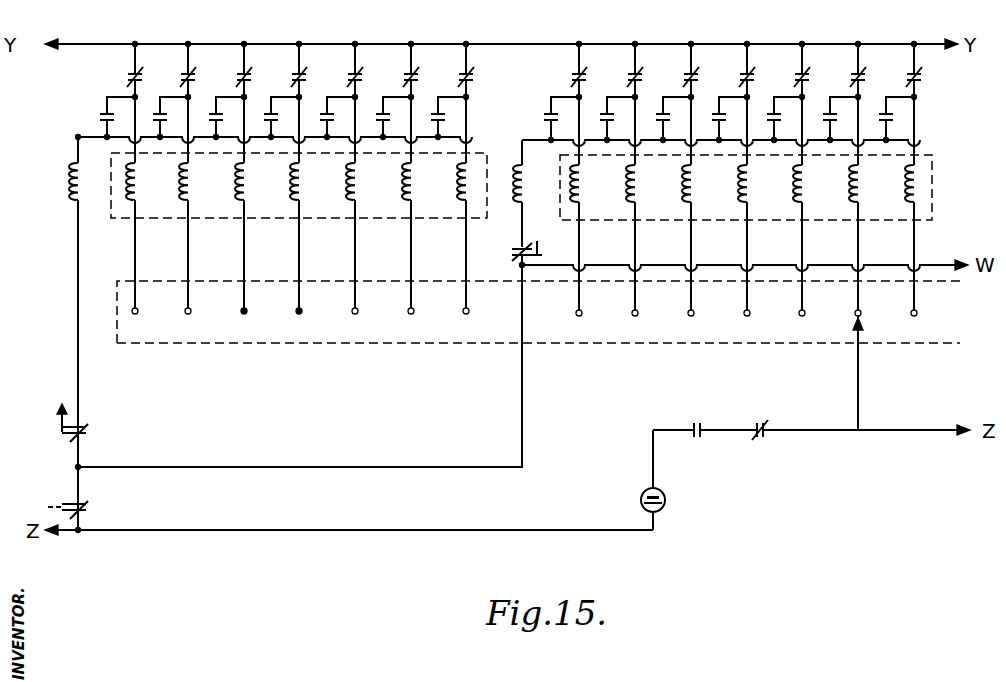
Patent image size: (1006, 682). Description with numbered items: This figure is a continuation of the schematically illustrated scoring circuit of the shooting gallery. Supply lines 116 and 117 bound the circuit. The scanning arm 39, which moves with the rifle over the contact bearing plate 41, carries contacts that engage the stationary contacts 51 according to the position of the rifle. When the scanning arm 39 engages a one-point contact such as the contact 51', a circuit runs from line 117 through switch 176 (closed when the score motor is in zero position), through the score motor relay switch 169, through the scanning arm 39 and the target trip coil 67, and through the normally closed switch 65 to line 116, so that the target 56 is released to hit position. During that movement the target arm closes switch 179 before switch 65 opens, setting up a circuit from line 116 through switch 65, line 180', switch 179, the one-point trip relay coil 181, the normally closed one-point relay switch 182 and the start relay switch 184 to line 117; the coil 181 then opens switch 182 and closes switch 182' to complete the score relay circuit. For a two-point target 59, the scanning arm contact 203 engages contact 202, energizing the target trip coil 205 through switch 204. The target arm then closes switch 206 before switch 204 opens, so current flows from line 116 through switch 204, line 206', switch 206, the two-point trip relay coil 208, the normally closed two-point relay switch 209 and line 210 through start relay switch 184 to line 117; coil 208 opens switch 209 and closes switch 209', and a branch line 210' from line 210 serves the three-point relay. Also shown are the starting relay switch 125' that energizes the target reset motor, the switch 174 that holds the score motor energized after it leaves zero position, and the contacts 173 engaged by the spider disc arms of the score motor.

The line 116 is at (318, 44).
The normally closed switch 65 is at (128, 76).
The line 180' is at (260, 105).
The switch 179 is at (100, 118).
The one-point trip relay coil 181 is at (70, 186).
The target trip coil 67 is at (136, 192).
The target 56 is at (122, 220).
The contact 51' is at (300, 322).
The contact bearing plate 41 is at (268, 343).
The switch 204 is at (606, 70).
The line 206' is at (721, 107).
The switch 206 is at (696, 114).
The two-point trip relay coil 208 is at (530, 190).
The target trip coil 205 is at (585, 192).
The target 59 is at (930, 158).
The normally closed two-point relay switch 209 is at (503, 261).
The two-point relay switch 209' is at (552, 238).
The contact 202 is at (582, 316).
The branch line 210' is at (747, 250).
The stationary contacts 51 is at (931, 324).
The scanning arm 39 is at (860, 392).
The contact 203 is at (856, 345).
The line 210 is at (300, 362).
The normally closed one-point relay switch 182 is at (88, 417).
The one-point relay switch 182' is at (39, 415).
The start relay switch 184 is at (90, 508).
The starting relay switch 125' is at (48, 495).
The line 117 is at (258, 532).
The contacts 173 is at (760, 424).
The score motor relay switch 169 is at (695, 440).
The switch 174 is at (646, 494).
The switch 176 is at (663, 492).